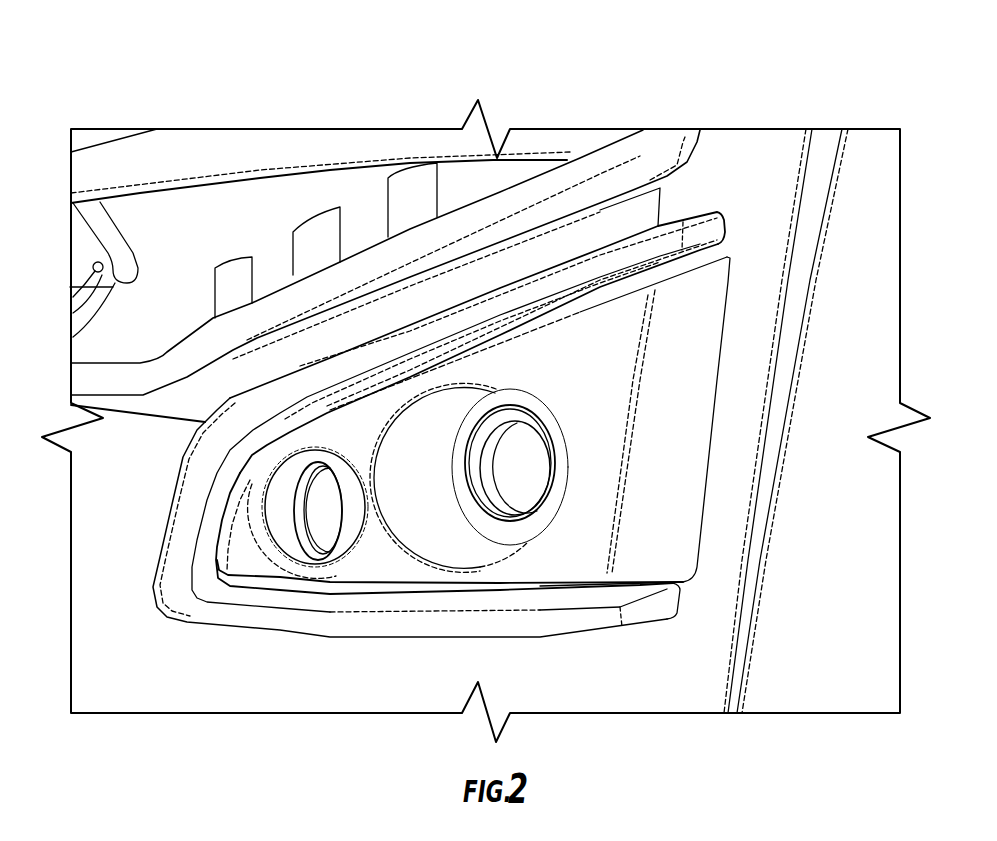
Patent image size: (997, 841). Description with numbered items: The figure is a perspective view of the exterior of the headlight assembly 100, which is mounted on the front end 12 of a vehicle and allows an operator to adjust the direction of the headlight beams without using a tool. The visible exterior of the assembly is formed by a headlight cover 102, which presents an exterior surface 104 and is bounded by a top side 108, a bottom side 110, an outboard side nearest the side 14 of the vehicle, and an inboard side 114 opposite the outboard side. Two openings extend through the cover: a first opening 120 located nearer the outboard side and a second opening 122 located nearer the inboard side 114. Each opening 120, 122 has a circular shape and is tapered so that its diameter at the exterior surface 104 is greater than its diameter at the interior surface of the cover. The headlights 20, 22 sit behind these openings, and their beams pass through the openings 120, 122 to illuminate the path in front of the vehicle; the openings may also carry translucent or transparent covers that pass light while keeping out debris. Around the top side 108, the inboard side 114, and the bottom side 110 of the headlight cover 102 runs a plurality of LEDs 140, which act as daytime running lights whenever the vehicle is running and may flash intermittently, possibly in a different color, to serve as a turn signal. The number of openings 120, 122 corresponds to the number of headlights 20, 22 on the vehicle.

The headlight assembly 100 is at (486, 376).
The front end 12 is at (136, 452).
The side 14 is at (779, 449).
The headlight 20 is at (469, 580).
The headlight 22 is at (308, 611).
The headlight cover 102 is at (419, 584).
The exterior surface 104 is at (530, 329).
The top side 108 is at (385, 225).
The bottom side 110 is at (590, 679).
The inboard side 114 is at (420, 624).
The first opening 120 is at (435, 325).
The second opening 122 is at (577, 345).
The plurality of LEDs 140 is at (477, 269).